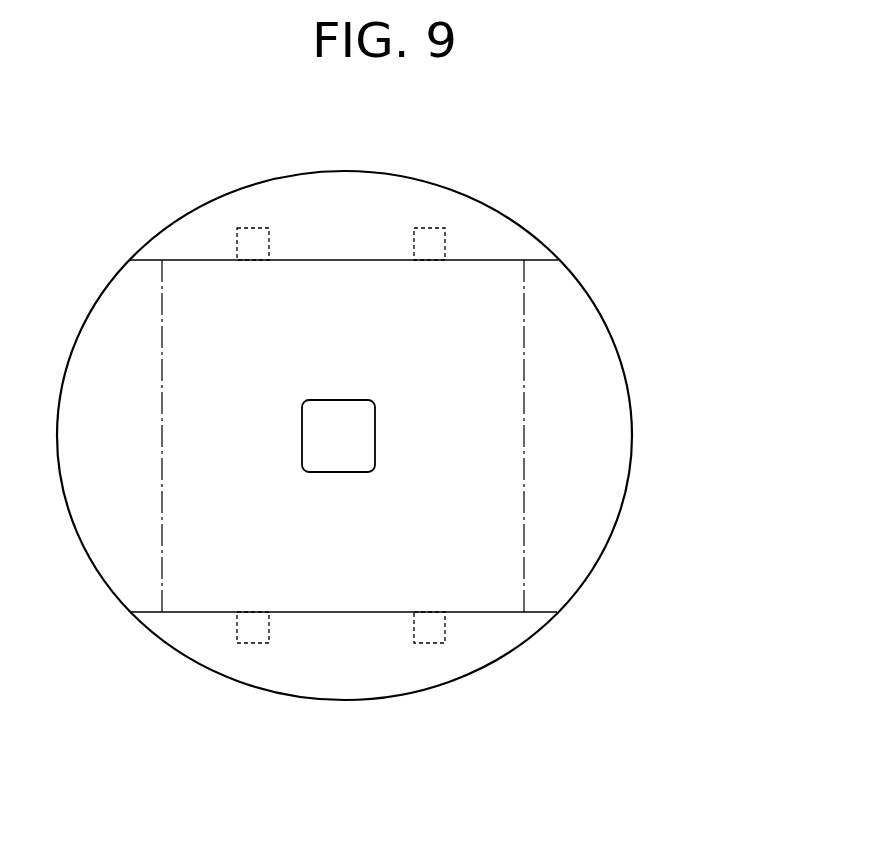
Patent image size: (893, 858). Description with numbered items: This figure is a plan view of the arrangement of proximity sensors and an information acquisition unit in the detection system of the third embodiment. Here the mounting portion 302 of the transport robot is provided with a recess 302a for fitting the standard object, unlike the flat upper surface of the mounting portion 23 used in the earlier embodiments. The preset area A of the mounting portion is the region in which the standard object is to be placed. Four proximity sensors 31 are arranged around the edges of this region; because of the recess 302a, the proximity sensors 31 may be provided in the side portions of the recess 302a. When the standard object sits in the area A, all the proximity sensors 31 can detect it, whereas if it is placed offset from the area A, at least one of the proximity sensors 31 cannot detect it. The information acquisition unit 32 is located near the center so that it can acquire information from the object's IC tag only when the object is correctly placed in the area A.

The mounting portion 302 is at (633, 480).
The recess 302a is at (540, 612).
The mounting portion 23 is at (590, 327).
The area A is at (524, 417).
The proximity sensors 31 is at (435, 232).
The information acquisition unit 32 is at (338, 449).